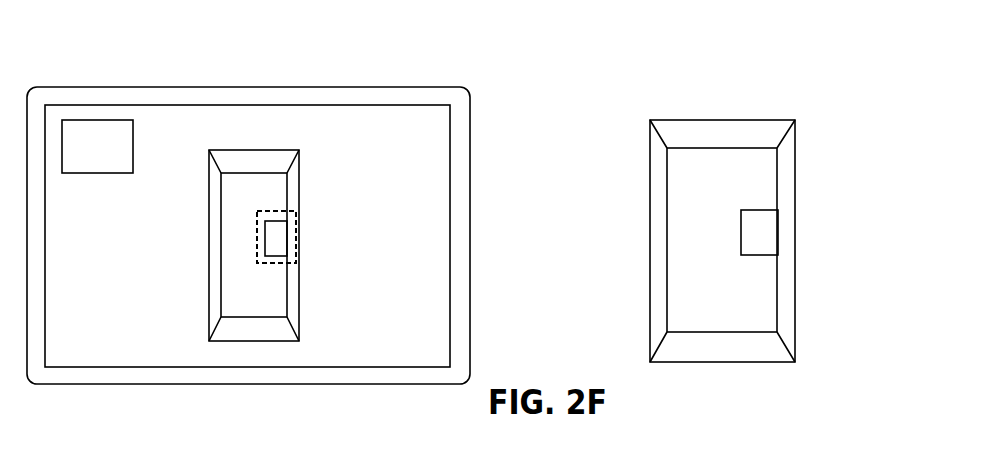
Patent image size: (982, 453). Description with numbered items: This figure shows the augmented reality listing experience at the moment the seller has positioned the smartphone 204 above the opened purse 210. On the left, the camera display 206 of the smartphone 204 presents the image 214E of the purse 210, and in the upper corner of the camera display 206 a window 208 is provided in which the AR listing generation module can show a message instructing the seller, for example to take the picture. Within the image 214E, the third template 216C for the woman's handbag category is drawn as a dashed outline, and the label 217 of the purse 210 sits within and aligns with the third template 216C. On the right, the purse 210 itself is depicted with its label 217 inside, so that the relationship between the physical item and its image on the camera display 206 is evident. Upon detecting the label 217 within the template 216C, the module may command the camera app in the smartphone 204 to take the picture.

The smartphone 204 is at (403, 87).
The camera display 206 is at (452, 192).
The window 208 is at (100, 122).
The image of the purse 214E is at (299, 187).
The third template 216C is at (257, 237).
The purse 210 is at (796, 177).
The label 217 is at (755, 232).